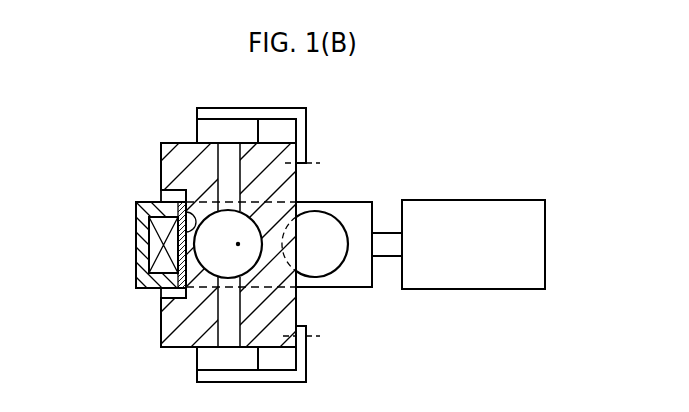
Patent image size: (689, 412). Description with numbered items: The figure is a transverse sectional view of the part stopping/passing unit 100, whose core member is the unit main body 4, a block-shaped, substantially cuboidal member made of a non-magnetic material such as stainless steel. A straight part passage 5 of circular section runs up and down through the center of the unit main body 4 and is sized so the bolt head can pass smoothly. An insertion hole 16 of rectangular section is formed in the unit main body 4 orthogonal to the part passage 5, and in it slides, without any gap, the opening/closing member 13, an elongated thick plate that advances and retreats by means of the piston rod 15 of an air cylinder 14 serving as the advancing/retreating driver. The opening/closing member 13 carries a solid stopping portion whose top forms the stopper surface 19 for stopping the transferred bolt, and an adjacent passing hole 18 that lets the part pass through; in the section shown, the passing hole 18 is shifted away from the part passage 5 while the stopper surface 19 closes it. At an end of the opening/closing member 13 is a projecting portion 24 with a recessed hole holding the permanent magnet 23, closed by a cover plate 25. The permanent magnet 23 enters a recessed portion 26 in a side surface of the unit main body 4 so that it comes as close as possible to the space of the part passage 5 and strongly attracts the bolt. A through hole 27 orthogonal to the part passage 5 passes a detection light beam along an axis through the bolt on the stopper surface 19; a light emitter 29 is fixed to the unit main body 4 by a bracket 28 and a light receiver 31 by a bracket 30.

The part stopping/passing unit 100 is at (382, 118).
The unit main body 4 is at (298, 175).
The part passage 5 is at (250, 216).
The opening/closing member 13 is at (358, 198).
The air cylinder 14 is at (497, 200).
The piston rod 15 is at (390, 257).
The insertion hole 16 is at (247, 281).
The passing hole 18 is at (330, 227).
The stopper surface 19 is at (240, 244).
The permanent magnet 23 is at (149, 240).
The projecting portion 24 is at (137, 268).
The cover plate 25 is at (180, 207).
The recessed portion 26 is at (168, 293).
The through hole 27 is at (225, 163).
The bracket 28 is at (307, 122).
The light emitter 29 is at (198, 129).
The bracket 30 is at (307, 365).
The light receiver 31 is at (198, 360).